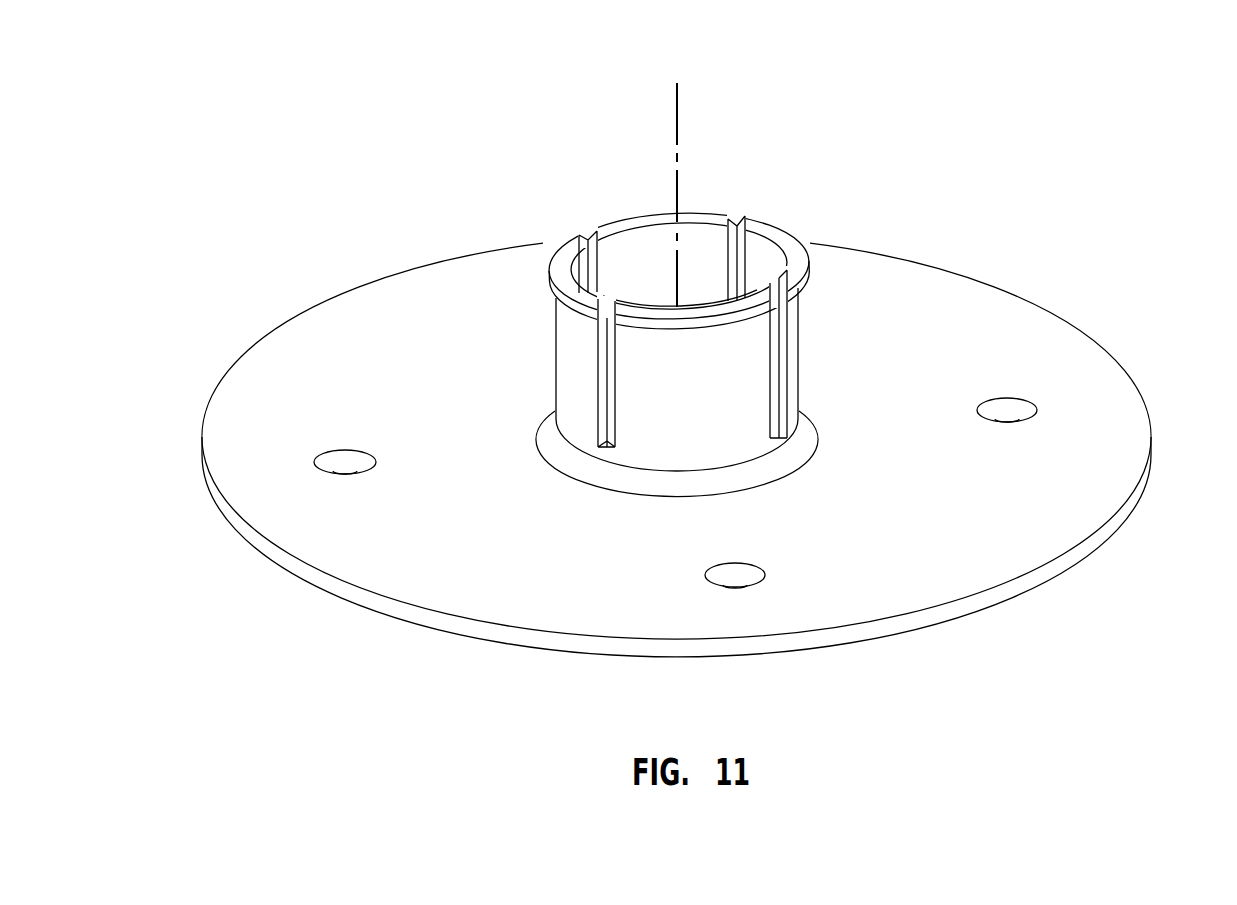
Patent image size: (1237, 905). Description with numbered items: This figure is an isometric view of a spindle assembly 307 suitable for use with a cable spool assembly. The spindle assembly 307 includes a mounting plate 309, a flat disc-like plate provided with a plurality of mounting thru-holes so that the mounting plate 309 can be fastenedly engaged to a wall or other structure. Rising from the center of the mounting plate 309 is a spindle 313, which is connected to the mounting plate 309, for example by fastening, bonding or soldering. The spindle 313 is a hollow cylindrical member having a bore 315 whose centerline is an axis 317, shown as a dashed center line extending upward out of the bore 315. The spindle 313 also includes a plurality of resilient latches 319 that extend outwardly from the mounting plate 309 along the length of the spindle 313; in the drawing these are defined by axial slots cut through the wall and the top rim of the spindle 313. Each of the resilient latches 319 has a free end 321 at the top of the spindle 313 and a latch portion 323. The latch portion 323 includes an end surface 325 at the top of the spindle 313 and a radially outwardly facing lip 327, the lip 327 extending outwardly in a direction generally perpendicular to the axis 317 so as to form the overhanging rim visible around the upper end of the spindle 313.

The spindle assembly 307 is at (993, 248).
The mounting plate 309 is at (1061, 529).
The spindle 313 is at (817, 336).
The bore 315 is at (612, 243).
The axis 317 is at (677, 110).
The resilient latches 319 is at (643, 394).
The free end 321 is at (576, 338).
The latch portion 323 is at (544, 256).
The end surface 325 is at (757, 232).
The lip 327 is at (793, 298).